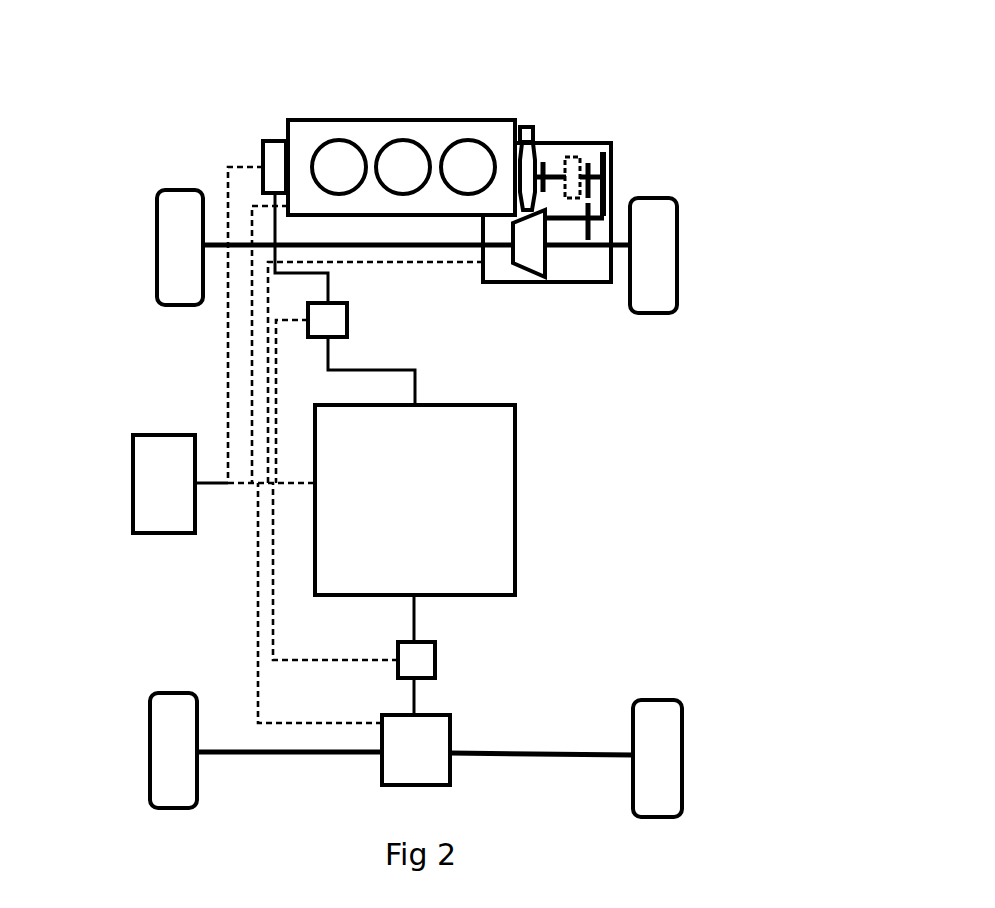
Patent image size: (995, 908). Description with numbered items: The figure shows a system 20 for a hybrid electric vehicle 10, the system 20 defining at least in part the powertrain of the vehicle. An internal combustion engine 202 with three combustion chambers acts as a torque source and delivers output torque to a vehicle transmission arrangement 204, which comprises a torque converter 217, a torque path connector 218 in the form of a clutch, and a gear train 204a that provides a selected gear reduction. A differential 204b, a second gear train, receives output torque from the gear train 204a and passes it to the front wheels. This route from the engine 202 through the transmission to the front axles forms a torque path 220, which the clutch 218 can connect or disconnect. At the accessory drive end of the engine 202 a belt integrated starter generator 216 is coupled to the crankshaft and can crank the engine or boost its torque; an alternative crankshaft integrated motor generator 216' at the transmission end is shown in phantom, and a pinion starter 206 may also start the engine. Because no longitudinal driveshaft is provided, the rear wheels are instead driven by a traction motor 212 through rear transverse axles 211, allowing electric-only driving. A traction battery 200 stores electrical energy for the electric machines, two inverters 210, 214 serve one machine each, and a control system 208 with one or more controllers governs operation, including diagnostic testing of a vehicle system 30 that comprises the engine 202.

The hybrid electric vehicle 10 is at (703, 58).
The system 20 is at (656, 134).
The vehicle system 30 is at (401, 121).
The electrical energy storage means 200 is at (515, 500).
The internal combustion engine 202 is at (368, 120).
The vehicle transmission arrangement 204 is at (548, 168).
The gear train 204a is at (605, 185).
The differential 204b is at (532, 278).
The pinion starter 206 is at (527, 127).
The control system 208 is at (132, 483).
The inverter 210 is at (435, 660).
The rear transverse axles 211 is at (540, 750).
The traction motor 212 is at (452, 773).
The inverter 214 is at (347, 318).
The belt integrated starter generator 216 is at (252, 281).
The crankshaft integrated motor generator 216' is at (615, 285).
The torque converter 217 is at (533, 145).
The torque path connector 218 is at (566, 156).
The torque path 220 is at (428, 252).